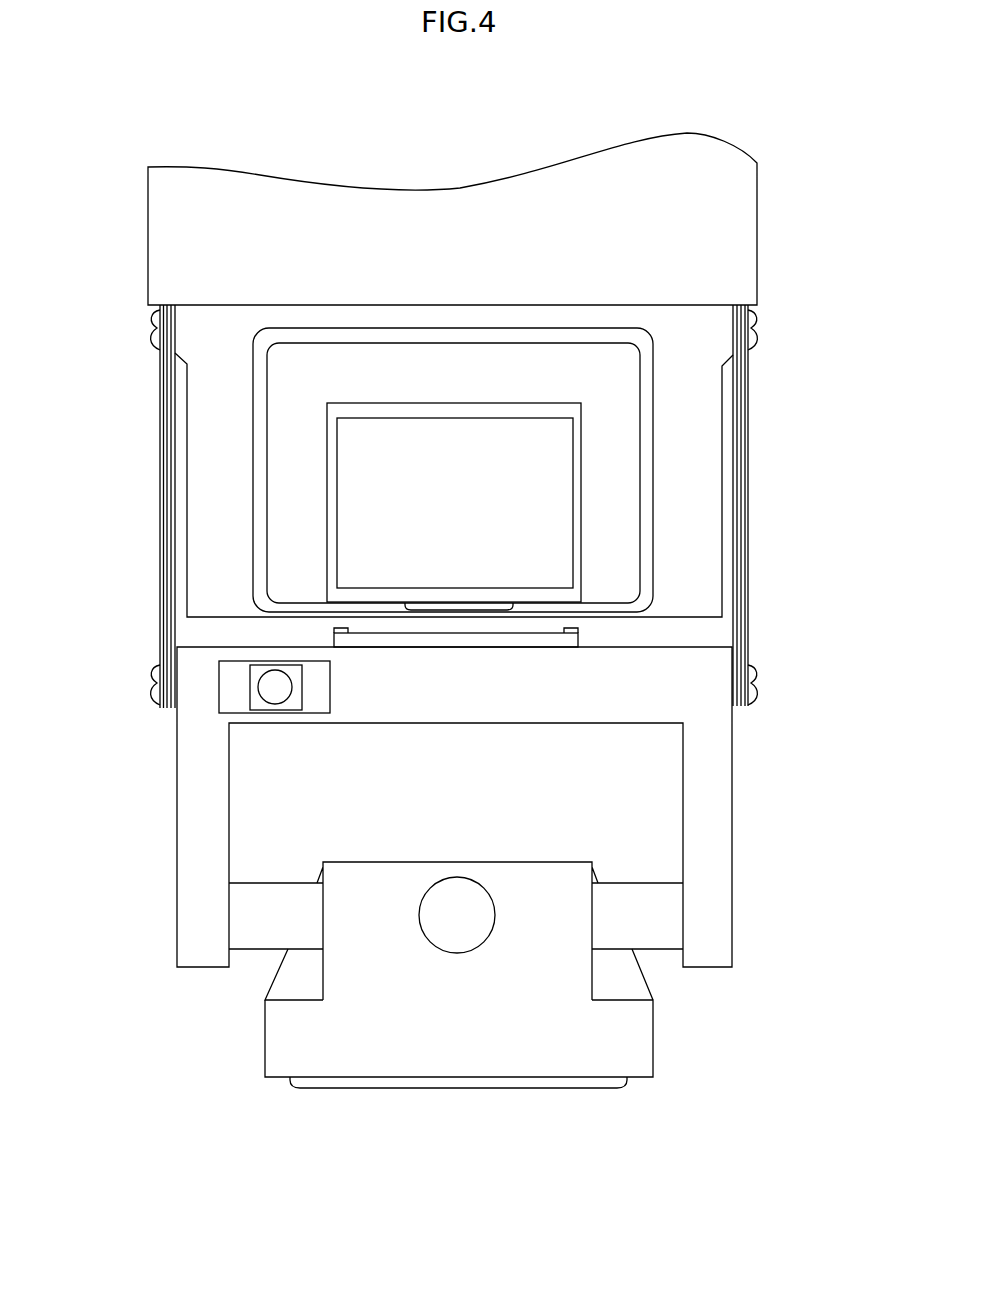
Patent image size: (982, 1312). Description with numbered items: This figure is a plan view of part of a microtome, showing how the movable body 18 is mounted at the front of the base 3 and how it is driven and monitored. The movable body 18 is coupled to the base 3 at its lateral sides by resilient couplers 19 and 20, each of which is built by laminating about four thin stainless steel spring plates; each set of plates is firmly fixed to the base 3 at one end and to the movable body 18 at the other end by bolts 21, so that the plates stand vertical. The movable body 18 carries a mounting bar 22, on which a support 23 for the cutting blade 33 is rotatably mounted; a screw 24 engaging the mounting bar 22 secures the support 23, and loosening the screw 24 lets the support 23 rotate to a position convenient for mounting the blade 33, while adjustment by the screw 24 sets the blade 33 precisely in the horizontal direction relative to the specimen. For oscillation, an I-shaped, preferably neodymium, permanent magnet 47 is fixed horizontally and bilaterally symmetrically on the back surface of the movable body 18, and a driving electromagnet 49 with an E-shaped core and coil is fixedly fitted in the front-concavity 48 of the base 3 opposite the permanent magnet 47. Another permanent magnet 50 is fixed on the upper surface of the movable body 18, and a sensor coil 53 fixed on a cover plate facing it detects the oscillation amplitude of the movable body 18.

The base 3 is at (700, 478).
The movable body 18 is at (733, 821).
The resilient coupler 19 is at (745, 545).
The resilient coupler 20 is at (164, 483).
The bolt 21 is at (158, 326).
The mounting bar 22 is at (646, 937).
The support 23 is at (483, 1089).
The screw 24 is at (458, 862).
The cutting blade 33 is at (392, 1089).
The permanent magnet 47 is at (580, 640).
The front-concavity 48 is at (645, 402).
The driving electromagnet 49 is at (478, 440).
The permanent magnet 50 is at (223, 708).
The sensor coil 53 is at (268, 695).